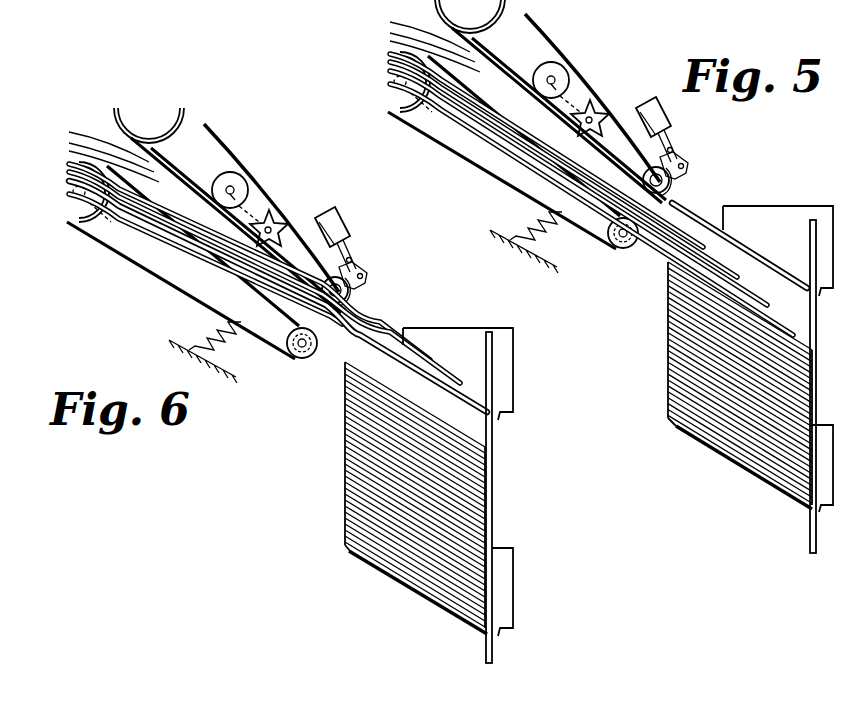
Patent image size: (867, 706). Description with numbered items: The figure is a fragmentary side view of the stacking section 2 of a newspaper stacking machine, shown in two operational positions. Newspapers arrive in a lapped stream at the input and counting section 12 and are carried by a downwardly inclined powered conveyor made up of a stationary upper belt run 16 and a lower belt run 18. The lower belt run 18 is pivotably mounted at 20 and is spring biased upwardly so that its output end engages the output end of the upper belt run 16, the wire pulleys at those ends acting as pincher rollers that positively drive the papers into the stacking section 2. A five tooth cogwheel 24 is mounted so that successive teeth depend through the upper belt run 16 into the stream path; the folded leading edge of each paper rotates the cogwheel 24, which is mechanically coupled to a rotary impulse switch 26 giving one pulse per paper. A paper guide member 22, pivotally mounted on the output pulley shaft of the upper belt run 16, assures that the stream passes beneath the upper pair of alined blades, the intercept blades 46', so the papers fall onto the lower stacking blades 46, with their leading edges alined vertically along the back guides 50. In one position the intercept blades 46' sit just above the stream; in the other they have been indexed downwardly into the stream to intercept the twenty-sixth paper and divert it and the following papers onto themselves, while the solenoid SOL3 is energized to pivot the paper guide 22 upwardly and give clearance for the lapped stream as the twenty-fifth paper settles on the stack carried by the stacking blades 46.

In FIG. 5, the stacking section 2 is at (850, 410).
In FIG. 6, the stacking section 2 is at (526, 510).
In FIG. 5, the input and counting section 12 is at (618, 46).
In FIG. 6, the input and counting section 12 is at (238, 215).
In FIG. 5, the upper belt run 16 is at (545, 27).
In FIG. 6, the upper belt run 16 is at (270, 191).
In FIG. 5, the lower belt run 18 is at (457, 157).
In FIG. 6, the lower belt run 18 is at (190, 262).
In FIG. 5, the pivot mounting 20 is at (396, 80).
In FIG. 6, the pivot mounting 20 is at (74, 187).
In FIG. 5, the paper guide member 22 is at (671, 200).
In FIG. 6, the paper guide member 22 is at (361, 282).
In FIG. 5, the cogwheel 24 is at (598, 108).
In FIG. 6, the cogwheel 24 is at (281, 208).
In FIG. 5, the rotary impulse switch 26 is at (570, 73).
In FIG. 6, the rotary impulse switch 26 is at (249, 184).
In FIG. 5, the stacking blades 46 is at (727, 385).
In FIG. 6, the stacking blades 46 is at (387, 498).
In FIG. 5, the intercept blades 46' is at (739, 234).
In FIG. 6, the intercept blades 46' is at (278, 296).
In FIG. 5, the back guides 50 is at (817, 353).
In FIG. 6, the back guides 50 is at (493, 440).
In FIG. 5, the solenoid SOL3 is at (671, 120).
In FIG. 6, the solenoid SOL3 is at (362, 246).